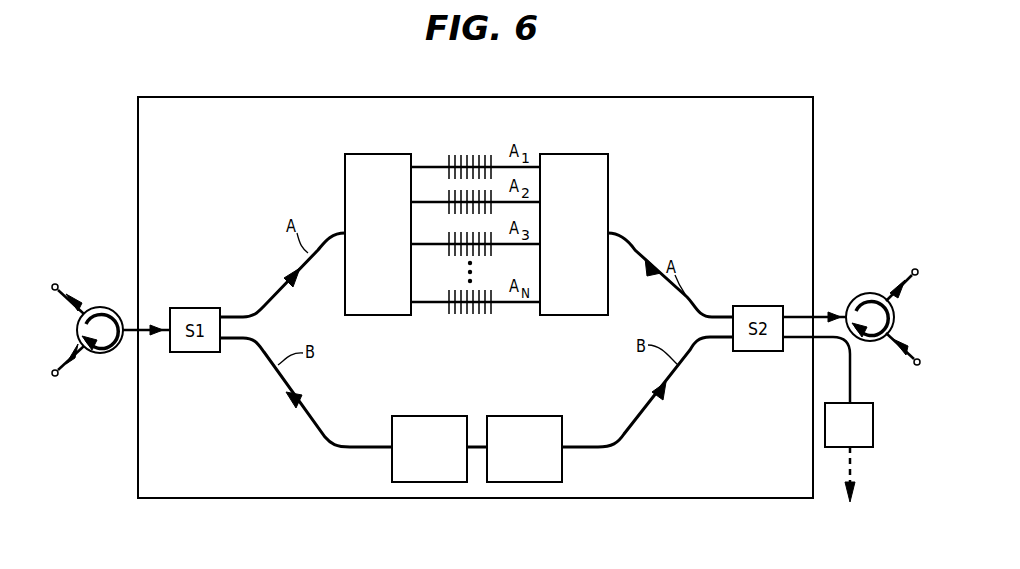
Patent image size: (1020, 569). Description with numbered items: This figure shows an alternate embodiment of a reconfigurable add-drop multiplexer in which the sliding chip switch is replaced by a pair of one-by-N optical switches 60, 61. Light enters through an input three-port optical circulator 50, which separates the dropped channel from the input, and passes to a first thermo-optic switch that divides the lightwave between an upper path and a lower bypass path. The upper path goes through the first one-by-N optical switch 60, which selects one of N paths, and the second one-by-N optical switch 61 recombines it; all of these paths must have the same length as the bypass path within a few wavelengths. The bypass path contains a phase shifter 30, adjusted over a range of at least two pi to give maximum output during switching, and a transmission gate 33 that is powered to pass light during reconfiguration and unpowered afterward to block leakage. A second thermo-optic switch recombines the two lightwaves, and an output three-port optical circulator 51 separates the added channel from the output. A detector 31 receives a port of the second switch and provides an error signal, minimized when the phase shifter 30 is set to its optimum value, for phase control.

The 3-port optical circulator 50 is at (97, 306).
The 3-port optical circulator 51 is at (872, 293).
The 1×N optical switch 60 is at (368, 153).
The 1×N optical switch 61 is at (578, 153).
The phase shifter 30 is at (418, 415).
The transmission gate 33 is at (523, 415).
The detector 31 is at (873, 433).